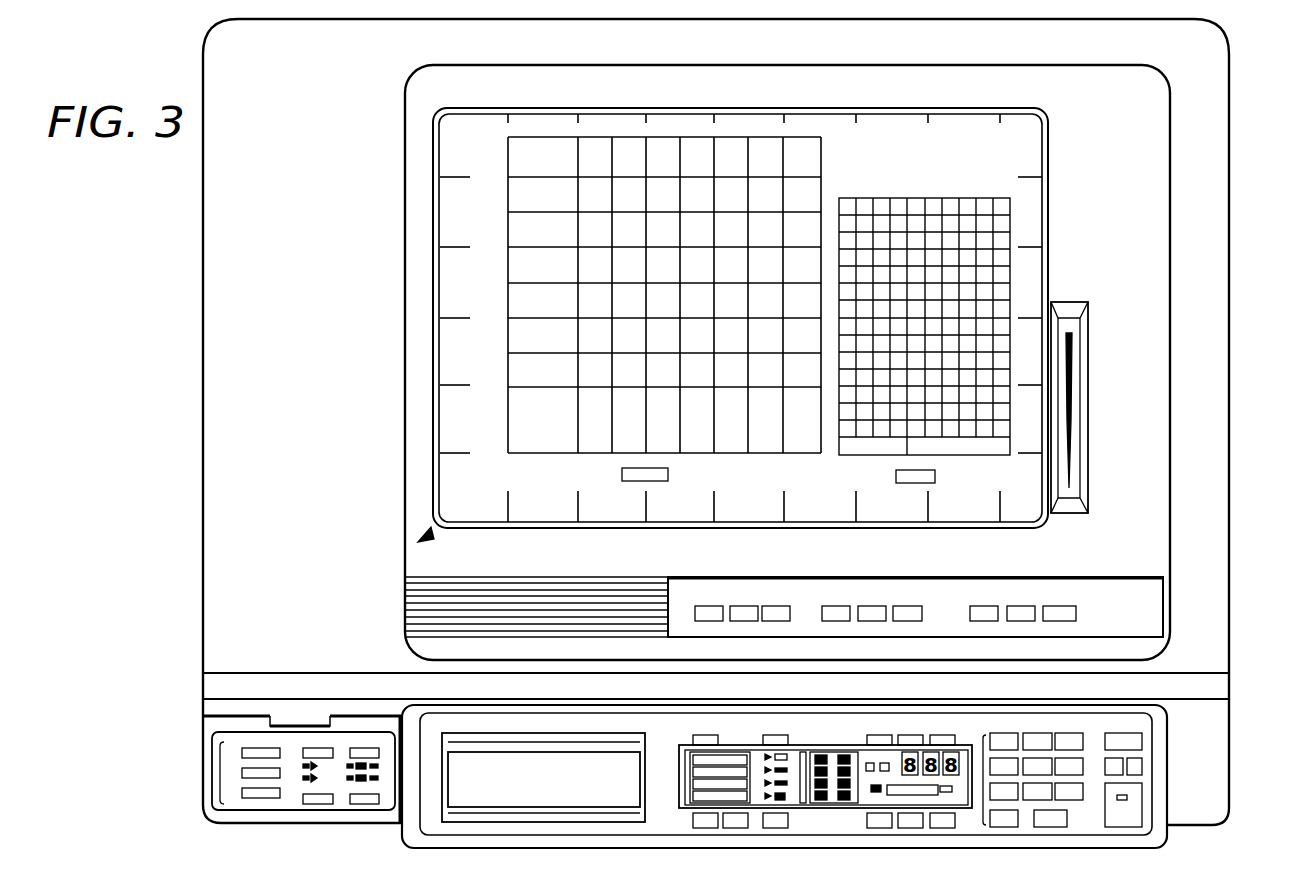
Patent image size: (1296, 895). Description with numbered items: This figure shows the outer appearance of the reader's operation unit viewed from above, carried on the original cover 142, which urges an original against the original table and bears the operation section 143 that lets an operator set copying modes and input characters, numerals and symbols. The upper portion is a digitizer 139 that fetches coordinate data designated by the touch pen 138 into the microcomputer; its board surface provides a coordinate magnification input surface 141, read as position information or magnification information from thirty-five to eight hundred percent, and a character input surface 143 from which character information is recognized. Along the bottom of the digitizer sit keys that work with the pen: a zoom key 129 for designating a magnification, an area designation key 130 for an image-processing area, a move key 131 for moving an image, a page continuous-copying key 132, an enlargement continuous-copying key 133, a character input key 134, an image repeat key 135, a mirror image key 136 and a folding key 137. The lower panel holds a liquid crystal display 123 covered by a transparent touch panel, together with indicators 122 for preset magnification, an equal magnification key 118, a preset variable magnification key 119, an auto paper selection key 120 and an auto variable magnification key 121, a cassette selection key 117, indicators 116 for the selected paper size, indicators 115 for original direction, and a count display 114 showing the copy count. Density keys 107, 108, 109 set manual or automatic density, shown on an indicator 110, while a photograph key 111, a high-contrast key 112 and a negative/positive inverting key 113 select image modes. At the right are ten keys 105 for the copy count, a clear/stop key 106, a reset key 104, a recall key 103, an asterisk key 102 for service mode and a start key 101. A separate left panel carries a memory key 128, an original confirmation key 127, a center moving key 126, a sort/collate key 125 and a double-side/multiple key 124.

The start key 101 is at (1128, 828).
The asterisk key 102 is at (1117, 777).
The recall key 103 is at (1143, 766).
The reset key 104 is at (1143, 740).
The ten keys 105 is at (976, 780).
The clear/stop key 106 is at (1056, 828).
The density key 107 is at (952, 829).
The density key 108 is at (916, 829).
The density key 109 is at (878, 829).
The indicator 110 is at (872, 794).
The photograph key 111 is at (957, 738).
The high-contrast key 112 is at (921, 738).
The negative/positive inverting key 113 is at (895, 738).
The count display 114 is at (979, 733).
The indicators 115 is at (880, 765).
The indicators 116 is at (803, 805).
The cassette selection key 117 is at (783, 829).
The equal magnification key 118 is at (742, 829).
The preset variable magnification key 119 is at (693, 820).
The auto paper selection key 120 is at (790, 740).
The auto variable magnification key 121 is at (720, 740).
The indicators 122 is at (686, 776).
The liquid crystal display 123 is at (443, 802).
The double-side/multiple key 124 is at (363, 804).
The sort/collate key 125 is at (318, 804).
The center moving key 126 is at (378, 755).
The original confirmation key 127 is at (331, 755).
The memory key 128 is at (211, 776).
The zoom key 129 is at (1059, 621).
The area designation key 130 is at (1021, 621).
The move key 131 is at (984, 621).
The page continuous-copying key 132 is at (907, 621).
The enlargement continuous-copying key 133 is at (872, 621).
The character input key 134 is at (836, 621).
The image repeat key 135 is at (776, 621).
The mirror image key 136 is at (744, 621).
The folding key 137 is at (709, 621).
The touch pen 138 is at (1074, 350).
The digitizer 139 is at (1050, 152).
The coordinate magnification input surface 141 is at (552, 456).
The original cover 142 is at (1171, 556).
The operation section / character input surface 143 is at (890, 197).